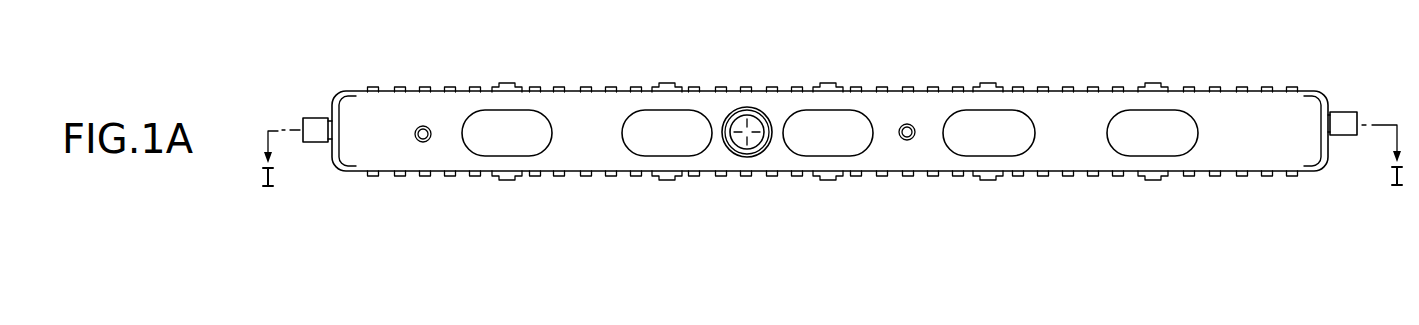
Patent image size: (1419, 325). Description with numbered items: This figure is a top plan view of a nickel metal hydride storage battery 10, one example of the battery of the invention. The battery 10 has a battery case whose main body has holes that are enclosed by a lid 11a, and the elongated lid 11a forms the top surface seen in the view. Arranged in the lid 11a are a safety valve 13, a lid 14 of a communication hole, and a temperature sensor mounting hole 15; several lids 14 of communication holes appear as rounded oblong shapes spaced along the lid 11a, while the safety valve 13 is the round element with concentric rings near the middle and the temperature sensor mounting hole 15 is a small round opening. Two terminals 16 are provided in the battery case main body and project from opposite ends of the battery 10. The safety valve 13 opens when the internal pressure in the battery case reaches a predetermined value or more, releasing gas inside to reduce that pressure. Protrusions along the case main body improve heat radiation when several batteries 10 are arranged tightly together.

The nickel metal hydride storage battery 10 is at (794, 119).
The lid 11a is at (360, 102).
The safety valve 13 is at (752, 122).
The lid of a communication hole 14 is at (525, 150).
The temperature sensor mounting hole 15 is at (423, 143).
The terminal 16 is at (320, 120).